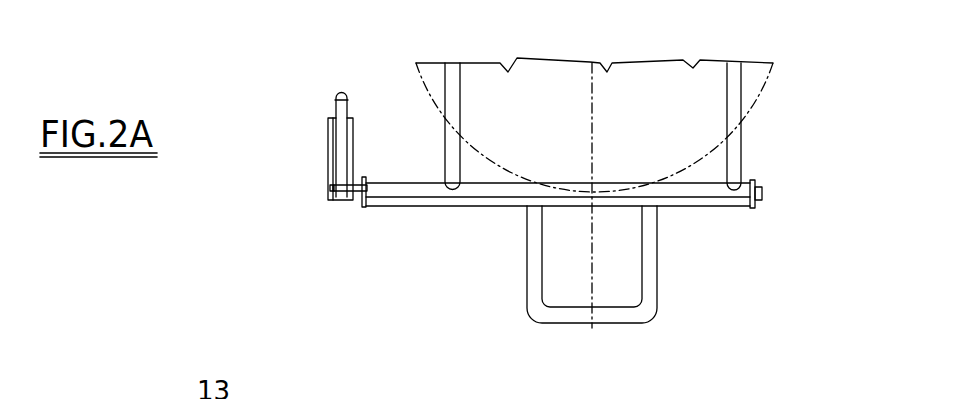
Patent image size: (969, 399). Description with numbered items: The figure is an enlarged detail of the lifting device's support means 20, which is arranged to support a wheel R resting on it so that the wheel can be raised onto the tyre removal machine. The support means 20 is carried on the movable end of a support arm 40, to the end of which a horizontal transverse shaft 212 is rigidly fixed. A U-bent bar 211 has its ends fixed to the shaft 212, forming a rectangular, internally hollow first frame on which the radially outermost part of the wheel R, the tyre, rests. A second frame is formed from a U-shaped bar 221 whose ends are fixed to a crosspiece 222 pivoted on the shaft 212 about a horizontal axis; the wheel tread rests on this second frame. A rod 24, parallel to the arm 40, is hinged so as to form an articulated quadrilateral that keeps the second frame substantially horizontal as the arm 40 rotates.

The support means 20 is at (705, 218).
The wheel R is at (420, 83).
The horizontal transverse shaft 212 is at (613, 185).
The crosspiece 222 is at (476, 207).
The U-bent bar 211 is at (740, 150).
The U-shaped bar 221 is at (655, 294).
The support arm 40 is at (328, 155).
The rod 24 is at (333, 105).